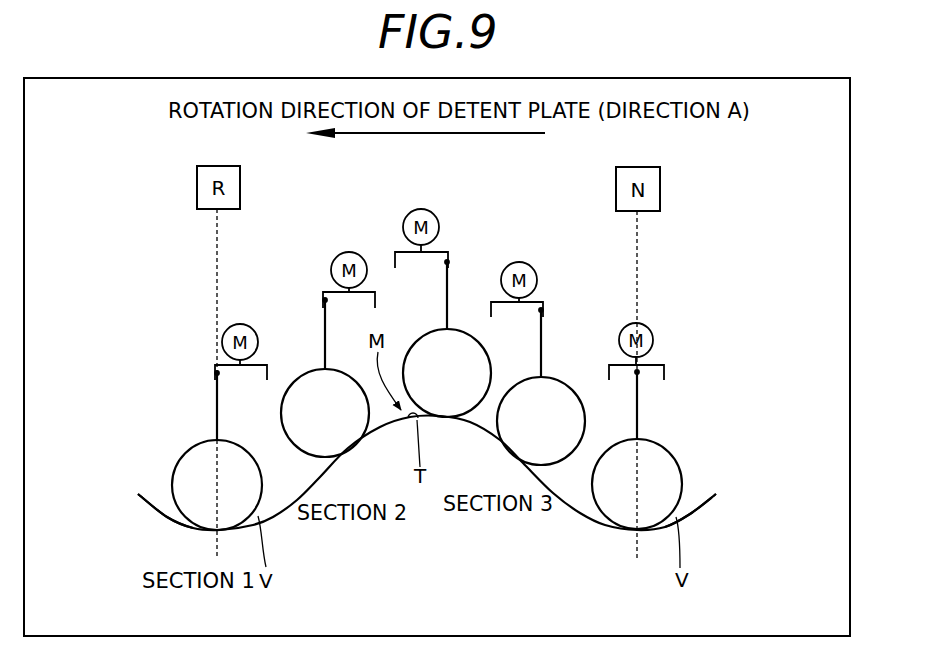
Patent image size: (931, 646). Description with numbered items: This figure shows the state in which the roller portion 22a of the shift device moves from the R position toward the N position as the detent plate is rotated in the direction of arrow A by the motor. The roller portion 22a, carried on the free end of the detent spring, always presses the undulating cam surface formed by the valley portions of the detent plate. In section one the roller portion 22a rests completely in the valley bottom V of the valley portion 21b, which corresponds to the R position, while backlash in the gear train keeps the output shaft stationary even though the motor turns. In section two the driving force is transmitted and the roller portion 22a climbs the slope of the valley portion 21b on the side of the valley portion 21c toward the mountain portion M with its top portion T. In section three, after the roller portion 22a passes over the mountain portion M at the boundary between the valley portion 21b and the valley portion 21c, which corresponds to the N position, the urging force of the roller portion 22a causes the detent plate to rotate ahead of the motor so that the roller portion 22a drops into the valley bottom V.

The roller portion 22a is at (187, 451).
The valley portion 21b is at (172, 509).
The valley portion 21c is at (682, 509).